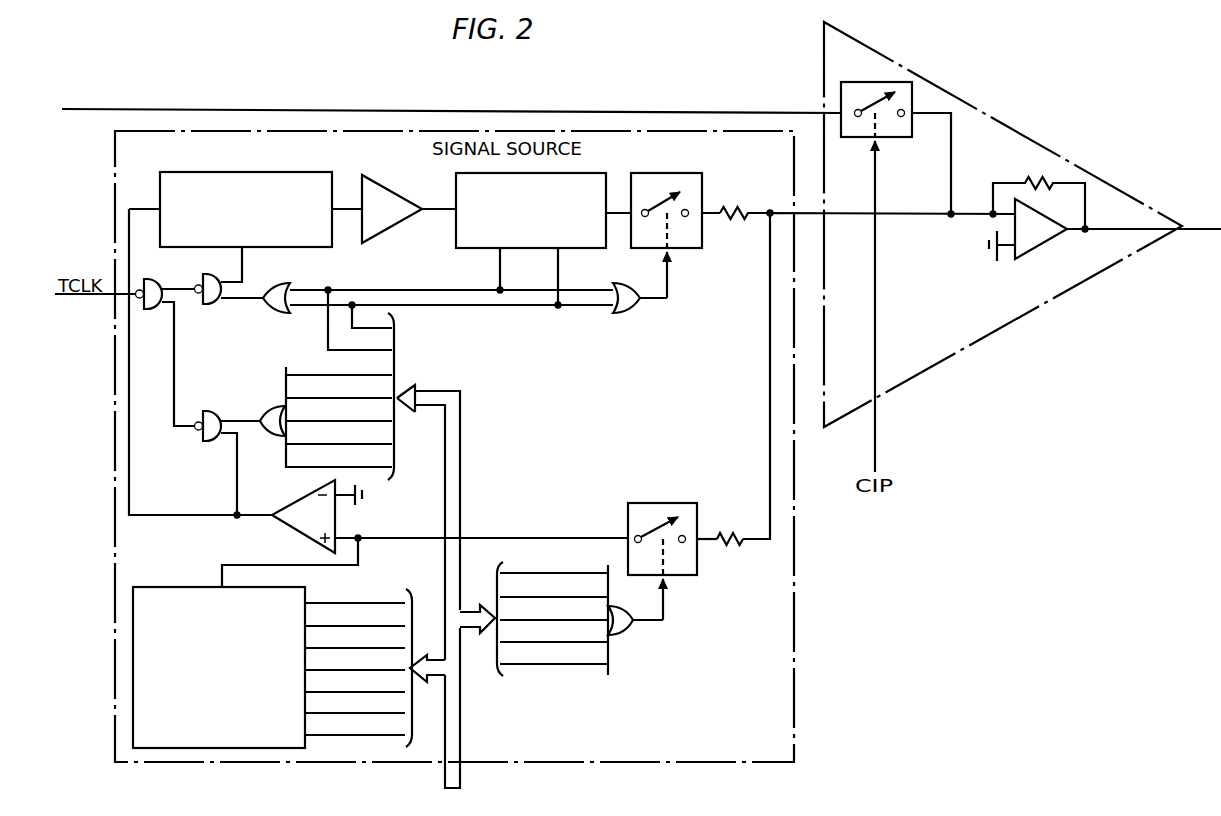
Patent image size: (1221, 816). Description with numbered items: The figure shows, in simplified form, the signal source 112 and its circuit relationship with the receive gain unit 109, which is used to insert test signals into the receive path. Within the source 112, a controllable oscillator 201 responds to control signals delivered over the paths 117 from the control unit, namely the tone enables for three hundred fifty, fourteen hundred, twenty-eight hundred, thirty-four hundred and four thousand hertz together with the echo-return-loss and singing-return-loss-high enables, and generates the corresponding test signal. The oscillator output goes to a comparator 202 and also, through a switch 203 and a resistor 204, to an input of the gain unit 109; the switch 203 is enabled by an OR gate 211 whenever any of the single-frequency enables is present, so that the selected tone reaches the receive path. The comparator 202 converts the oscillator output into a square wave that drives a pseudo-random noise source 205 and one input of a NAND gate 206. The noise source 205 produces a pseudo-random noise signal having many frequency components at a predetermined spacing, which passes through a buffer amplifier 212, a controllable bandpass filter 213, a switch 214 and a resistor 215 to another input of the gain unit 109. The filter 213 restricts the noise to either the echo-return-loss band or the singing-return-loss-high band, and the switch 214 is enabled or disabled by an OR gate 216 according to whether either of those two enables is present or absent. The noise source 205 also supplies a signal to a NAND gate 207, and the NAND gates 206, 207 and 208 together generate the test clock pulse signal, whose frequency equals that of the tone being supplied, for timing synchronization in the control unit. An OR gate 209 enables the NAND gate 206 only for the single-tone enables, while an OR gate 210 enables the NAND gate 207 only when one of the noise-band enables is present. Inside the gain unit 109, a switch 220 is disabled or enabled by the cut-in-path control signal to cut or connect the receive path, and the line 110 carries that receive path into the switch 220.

The gain unit 109 is at (998, 118).
The line 110 is at (106, 109).
The signal source 112 is at (115, 164).
The paths 117 is at (460, 776).
The controllable oscillator 201 is at (160, 587).
The comparator 202 is at (288, 528).
The switch 203 is at (660, 503).
The resistor 204 is at (725, 528).
The pseudo-random noise source 205 is at (236, 173).
The NAND gate 206 is at (200, 441).
The NAND gate 207 is at (210, 305).
The NAND gate 208 is at (152, 286).
The OR gate 209 is at (266, 413).
The OR gate 210 is at (284, 284).
The OR gate 211 is at (622, 634).
The buffer amplifier 212 is at (404, 237).
The controllable bandpass filter 213 is at (479, 248).
The switch 214 is at (665, 173).
The resistor 215 is at (740, 204).
The OR gate 216 is at (634, 311).
The switch 220 is at (860, 82).